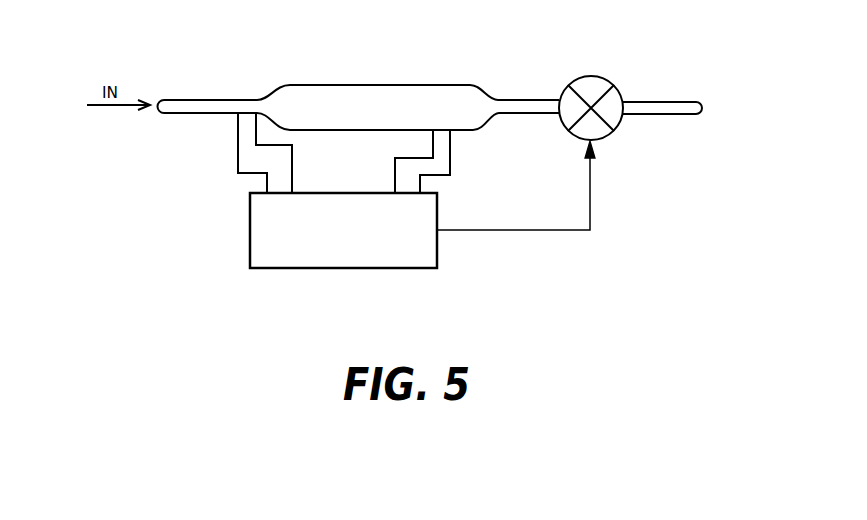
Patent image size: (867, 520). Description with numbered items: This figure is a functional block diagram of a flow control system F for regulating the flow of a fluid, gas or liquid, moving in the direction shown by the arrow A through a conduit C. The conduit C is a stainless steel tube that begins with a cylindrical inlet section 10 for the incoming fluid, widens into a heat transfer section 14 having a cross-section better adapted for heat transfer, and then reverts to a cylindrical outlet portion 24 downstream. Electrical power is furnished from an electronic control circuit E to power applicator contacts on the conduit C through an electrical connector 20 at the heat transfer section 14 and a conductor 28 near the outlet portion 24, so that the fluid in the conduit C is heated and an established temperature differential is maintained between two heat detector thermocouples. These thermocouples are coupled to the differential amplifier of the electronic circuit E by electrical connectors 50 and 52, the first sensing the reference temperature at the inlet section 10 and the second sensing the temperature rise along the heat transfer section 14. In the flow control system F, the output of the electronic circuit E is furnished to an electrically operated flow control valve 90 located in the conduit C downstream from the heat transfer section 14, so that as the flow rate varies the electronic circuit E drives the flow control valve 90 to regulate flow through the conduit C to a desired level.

The inlet section 10 is at (175, 118).
The heat transfer section 14 is at (376, 85).
The electrical connector 20 is at (292, 153).
The outlet portion 24 is at (684, 103).
The conductor 28 is at (450, 157).
The electrical connector 50 is at (238, 157).
The electrical connector 52 is at (395, 178).
The flow control valve 90 is at (607, 78).
The arrow indicating direction of fluid flow A is at (118, 106).
The conduit C is at (195, 74).
The electronic control circuit E is at (263, 271).
The flow control system F is at (451, 302).